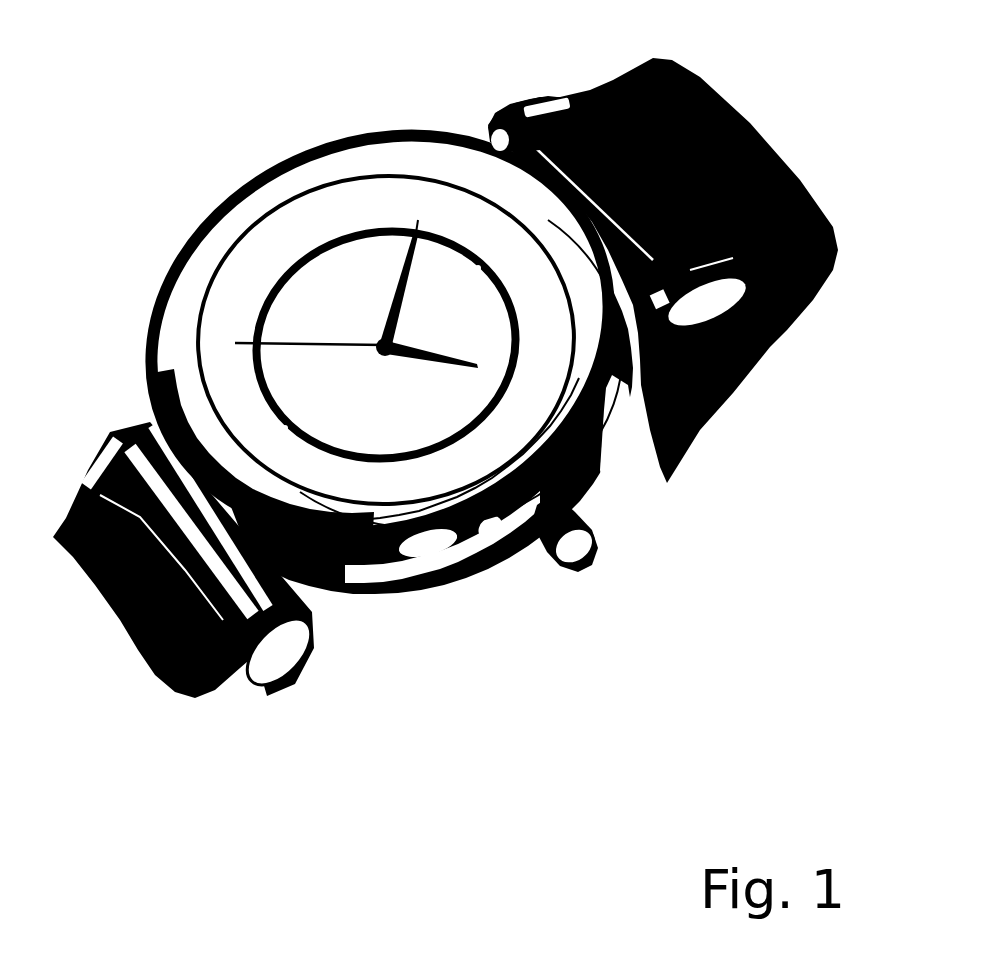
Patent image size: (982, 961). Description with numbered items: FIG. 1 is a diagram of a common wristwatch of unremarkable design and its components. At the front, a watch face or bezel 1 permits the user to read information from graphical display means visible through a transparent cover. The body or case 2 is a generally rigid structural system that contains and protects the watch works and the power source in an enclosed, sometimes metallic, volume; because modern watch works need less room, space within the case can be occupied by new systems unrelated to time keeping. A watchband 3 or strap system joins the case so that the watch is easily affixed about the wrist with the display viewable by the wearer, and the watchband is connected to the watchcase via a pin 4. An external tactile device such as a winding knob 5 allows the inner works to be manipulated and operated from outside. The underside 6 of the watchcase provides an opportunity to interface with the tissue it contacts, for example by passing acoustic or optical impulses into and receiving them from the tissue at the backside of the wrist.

The watch face or bezel 1 is at (316, 232).
The body or case 2 is at (563, 470).
The watchband 3 is at (780, 160).
The pin 4 is at (535, 100).
The winding knob 5 is at (575, 548).
The underside 6 is at (455, 597).